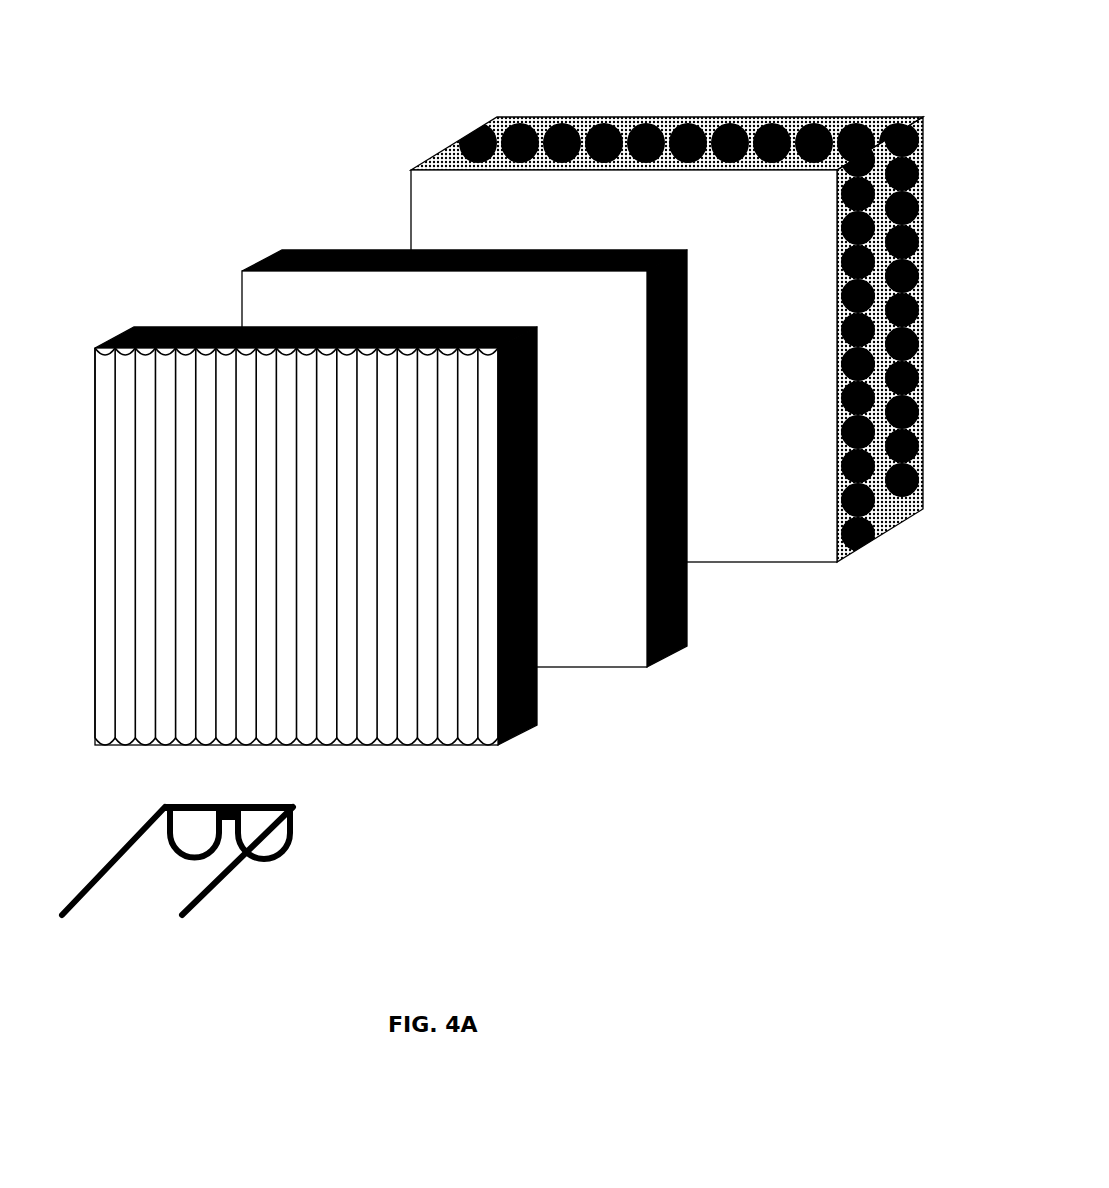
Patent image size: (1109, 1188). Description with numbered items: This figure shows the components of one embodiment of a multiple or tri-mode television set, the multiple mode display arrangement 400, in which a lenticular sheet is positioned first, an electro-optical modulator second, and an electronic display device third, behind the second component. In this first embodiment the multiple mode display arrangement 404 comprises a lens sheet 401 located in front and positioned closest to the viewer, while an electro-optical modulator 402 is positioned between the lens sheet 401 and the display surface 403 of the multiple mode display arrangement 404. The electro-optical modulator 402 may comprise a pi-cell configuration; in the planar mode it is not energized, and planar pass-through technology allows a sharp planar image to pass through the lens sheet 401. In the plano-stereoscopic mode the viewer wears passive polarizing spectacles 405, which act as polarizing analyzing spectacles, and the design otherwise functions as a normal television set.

The multiple mode display arrangement 400 is at (674, 339).
The lens sheet 401 is at (175, 313).
The electro-optical modulator 402 is at (352, 235).
The display surface 403 is at (752, 478).
The multiple mode display arrangement 404 is at (538, 102).
The passive polarizing spectacles 405 is at (243, 878).